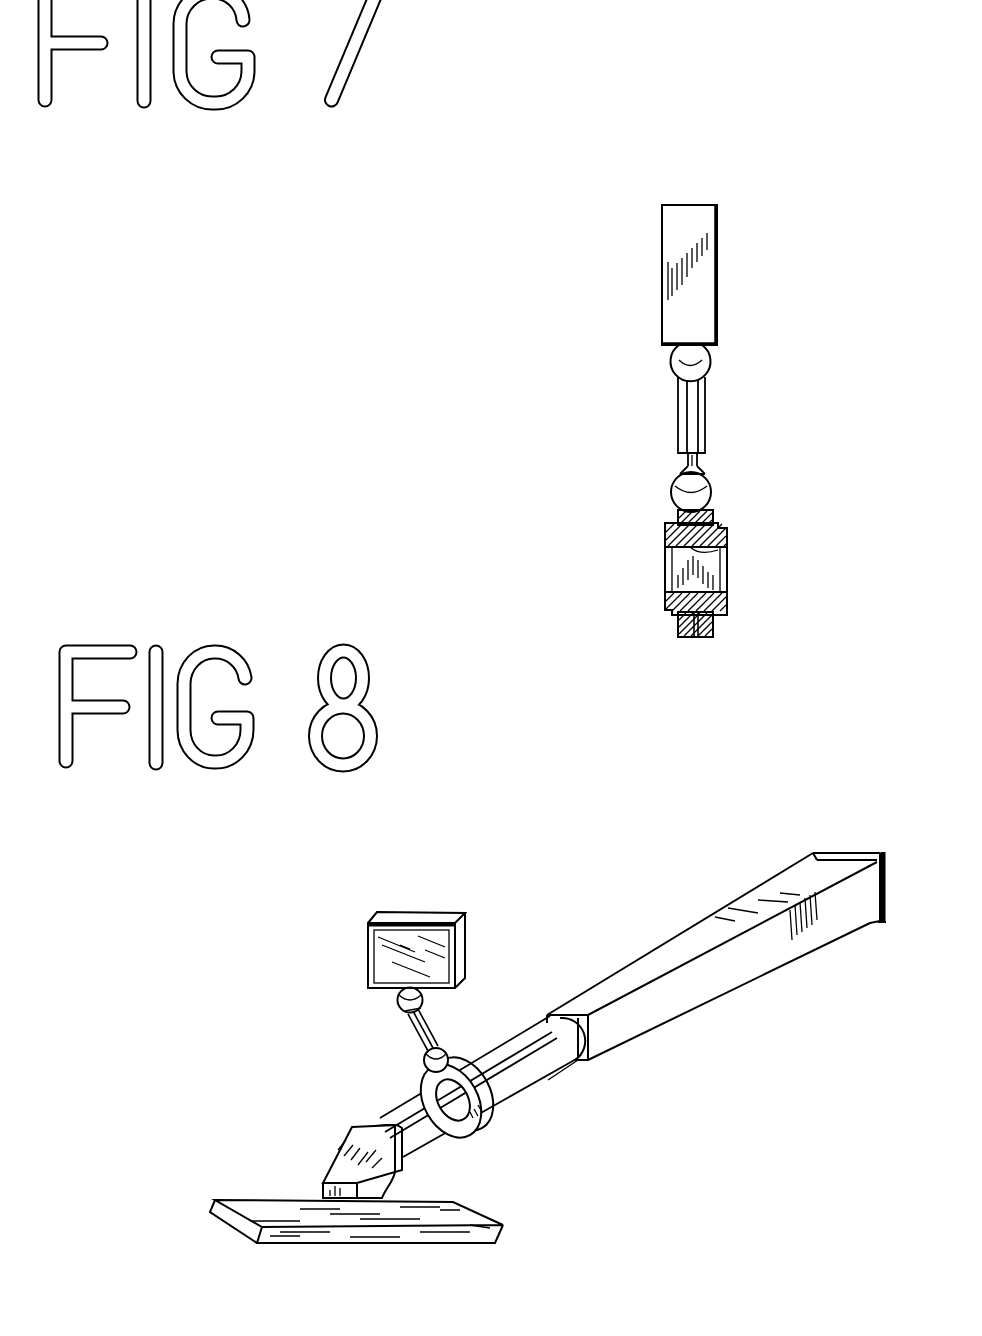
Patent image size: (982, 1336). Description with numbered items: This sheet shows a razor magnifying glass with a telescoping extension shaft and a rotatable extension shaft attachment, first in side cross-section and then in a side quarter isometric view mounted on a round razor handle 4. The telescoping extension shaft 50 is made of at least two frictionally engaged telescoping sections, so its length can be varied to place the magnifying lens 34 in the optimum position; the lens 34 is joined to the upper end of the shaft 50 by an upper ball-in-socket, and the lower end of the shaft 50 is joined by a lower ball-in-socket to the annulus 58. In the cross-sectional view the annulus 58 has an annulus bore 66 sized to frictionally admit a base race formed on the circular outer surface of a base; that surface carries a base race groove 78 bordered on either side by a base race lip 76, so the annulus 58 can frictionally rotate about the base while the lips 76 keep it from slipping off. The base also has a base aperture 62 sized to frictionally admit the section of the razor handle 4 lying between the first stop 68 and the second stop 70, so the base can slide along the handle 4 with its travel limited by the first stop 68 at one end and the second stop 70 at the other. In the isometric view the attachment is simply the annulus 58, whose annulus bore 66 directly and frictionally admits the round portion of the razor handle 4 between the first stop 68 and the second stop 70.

In FIG. 7, the magnifying lens 34 is at (717, 277).
In FIG. 7, the telescoping extension shaft 50 is at (705, 410).
In FIG. 7, the base race lip 76 is at (668, 523).
In FIG. 7, the base race groove 78 is at (707, 550).
In FIG. 7, the base aperture 62 is at (673, 568).
In FIG. 7, the annulus bore 66 is at (695, 637).
In FIG. 8, the annulus bore 66 is at (405, 1103).
In FIG. 7, the annulus 58 is at (715, 627).
In FIG. 8, the annulus 58 is at (488, 1118).
In FIG. 8, the second stop 70 is at (578, 1013).
In FIG. 8, the first stop 68 is at (352, 1127).
In FIG. 8, the razor handle 4 is at (547, 1080).